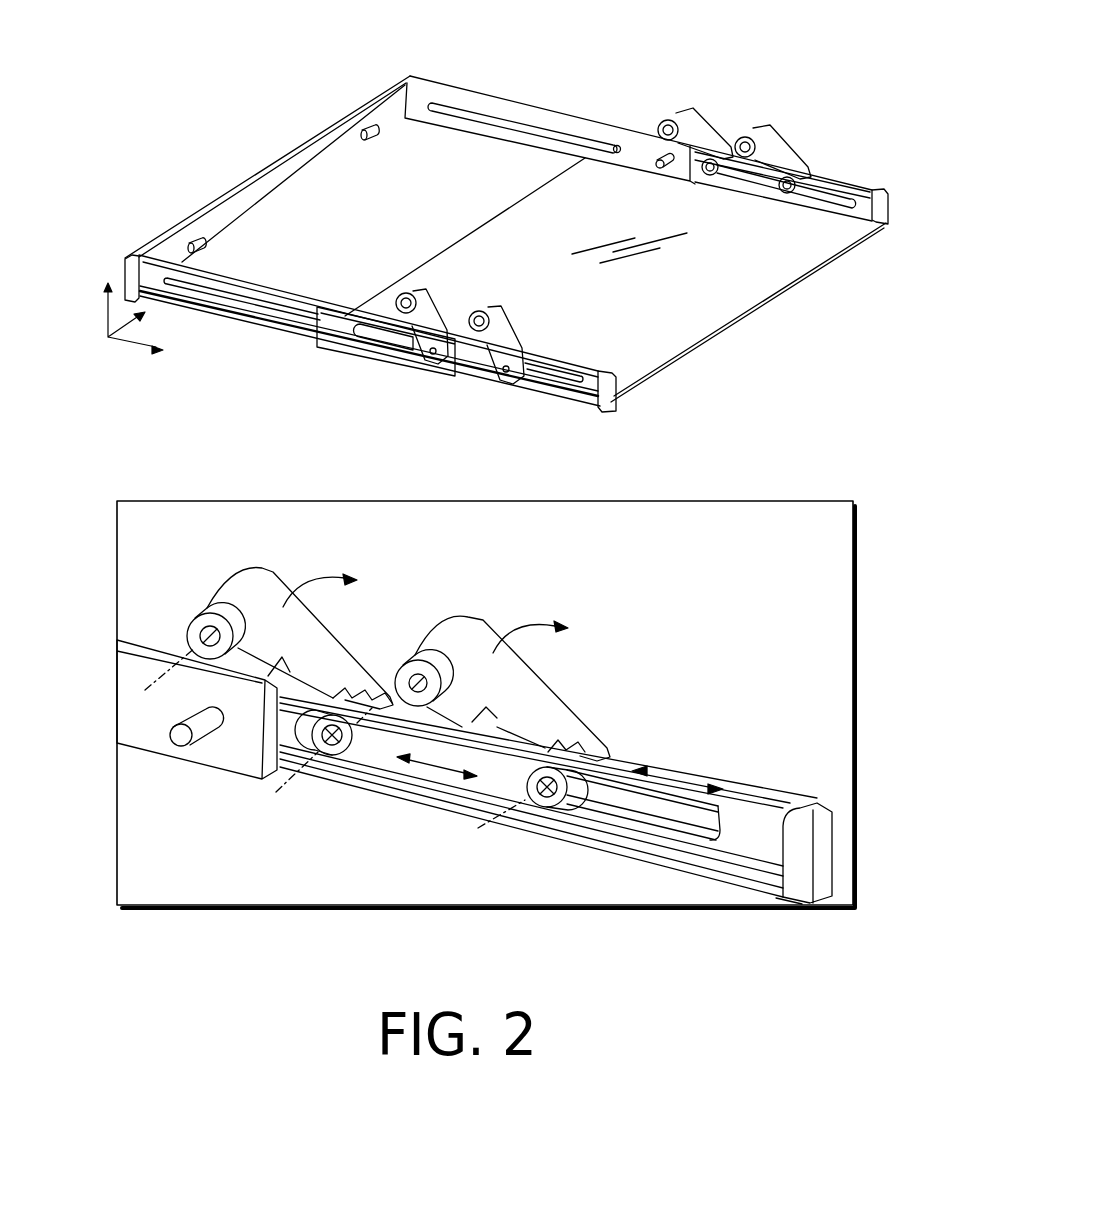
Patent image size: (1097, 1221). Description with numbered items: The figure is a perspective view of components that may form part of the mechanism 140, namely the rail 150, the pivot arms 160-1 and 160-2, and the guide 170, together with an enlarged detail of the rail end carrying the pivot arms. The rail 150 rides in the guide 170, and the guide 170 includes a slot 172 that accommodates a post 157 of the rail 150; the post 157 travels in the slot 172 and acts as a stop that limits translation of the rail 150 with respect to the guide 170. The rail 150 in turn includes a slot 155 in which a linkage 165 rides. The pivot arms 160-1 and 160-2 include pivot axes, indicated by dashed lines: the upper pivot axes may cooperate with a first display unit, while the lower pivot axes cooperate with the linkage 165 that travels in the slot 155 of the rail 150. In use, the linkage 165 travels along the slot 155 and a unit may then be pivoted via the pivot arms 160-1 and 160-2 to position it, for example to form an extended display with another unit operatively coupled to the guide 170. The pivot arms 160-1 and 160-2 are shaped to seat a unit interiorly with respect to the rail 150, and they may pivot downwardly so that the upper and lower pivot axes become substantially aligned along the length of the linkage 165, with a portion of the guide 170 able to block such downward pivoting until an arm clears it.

The mechanism 140 is at (586, 46).
The rail 150 is at (843, 210).
The slot 155 is at (780, 197).
The post 157 is at (621, 153).
The pivot arm 160-1 is at (693, 112).
The pivot arm 160-2 is at (767, 133).
The linkage 165 is at (740, 175).
The guide 170 is at (537, 140).
The slot 172 is at (477, 122).